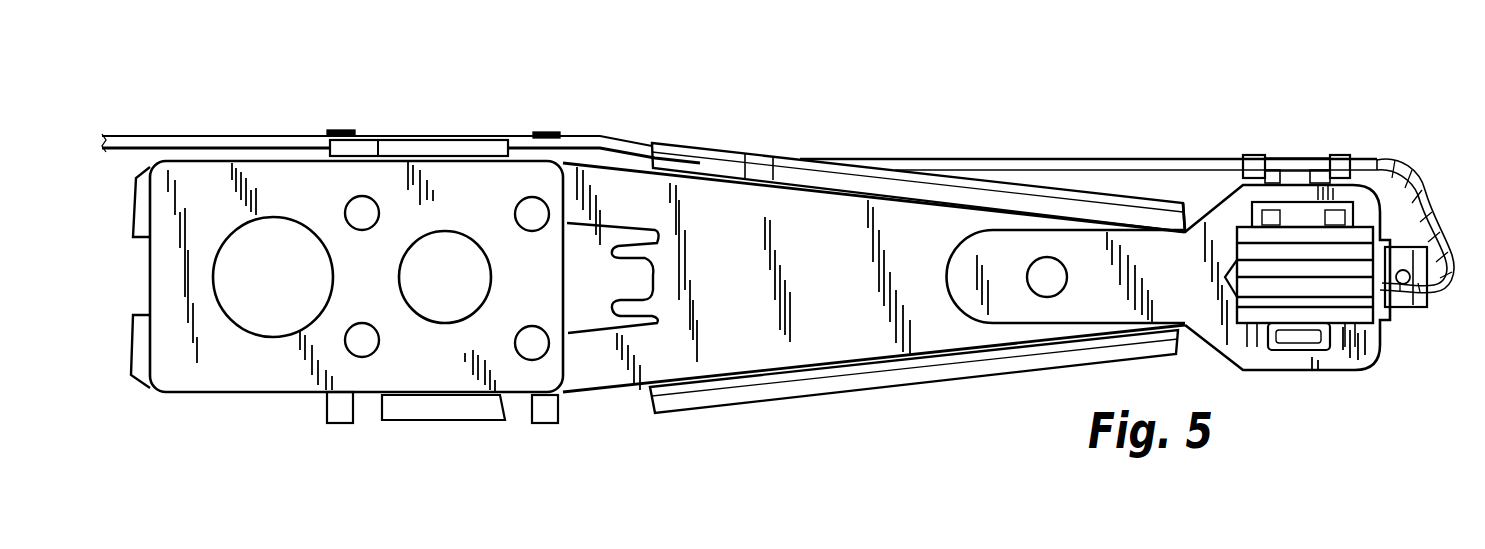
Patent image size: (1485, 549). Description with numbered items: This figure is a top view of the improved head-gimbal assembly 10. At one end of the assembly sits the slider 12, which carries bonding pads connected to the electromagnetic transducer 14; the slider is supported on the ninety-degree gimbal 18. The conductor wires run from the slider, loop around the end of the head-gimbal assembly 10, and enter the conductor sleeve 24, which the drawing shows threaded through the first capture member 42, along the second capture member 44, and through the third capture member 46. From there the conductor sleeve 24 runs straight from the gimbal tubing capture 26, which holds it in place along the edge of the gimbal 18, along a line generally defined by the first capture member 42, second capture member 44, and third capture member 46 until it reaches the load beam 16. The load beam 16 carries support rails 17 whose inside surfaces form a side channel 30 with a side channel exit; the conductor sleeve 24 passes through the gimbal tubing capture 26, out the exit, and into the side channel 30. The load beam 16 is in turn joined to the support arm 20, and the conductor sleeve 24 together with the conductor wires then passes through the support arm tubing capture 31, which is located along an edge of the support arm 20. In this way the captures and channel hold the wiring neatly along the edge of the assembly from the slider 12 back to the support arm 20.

The head-gimbal assembly 10 is at (874, 242).
The slider 12 is at (1337, 300).
The electromagnetic transducer 14 is at (1385, 232).
The load beam 16 is at (965, 223).
The support rails 17 is at (783, 173).
The gimbal 18 is at (1090, 300).
The support arm 20 is at (265, 176).
The conductor sleeve 24 is at (1062, 157).
The gimbal tubing capture 26 is at (1206, 140).
The side channel 30 is at (735, 167).
The support arm tubing capture 31 is at (477, 128).
The first capture member 42 is at (1340, 157).
The second capture member 44 is at (1290, 167).
The third capture member 46 is at (1253, 157).